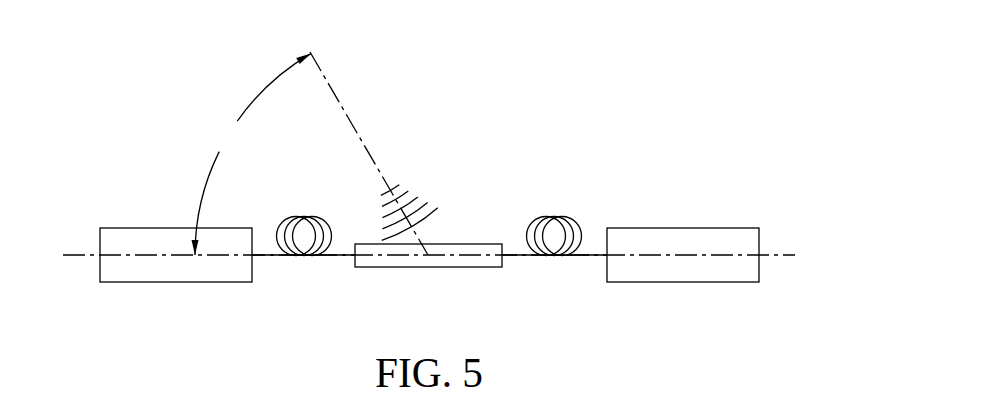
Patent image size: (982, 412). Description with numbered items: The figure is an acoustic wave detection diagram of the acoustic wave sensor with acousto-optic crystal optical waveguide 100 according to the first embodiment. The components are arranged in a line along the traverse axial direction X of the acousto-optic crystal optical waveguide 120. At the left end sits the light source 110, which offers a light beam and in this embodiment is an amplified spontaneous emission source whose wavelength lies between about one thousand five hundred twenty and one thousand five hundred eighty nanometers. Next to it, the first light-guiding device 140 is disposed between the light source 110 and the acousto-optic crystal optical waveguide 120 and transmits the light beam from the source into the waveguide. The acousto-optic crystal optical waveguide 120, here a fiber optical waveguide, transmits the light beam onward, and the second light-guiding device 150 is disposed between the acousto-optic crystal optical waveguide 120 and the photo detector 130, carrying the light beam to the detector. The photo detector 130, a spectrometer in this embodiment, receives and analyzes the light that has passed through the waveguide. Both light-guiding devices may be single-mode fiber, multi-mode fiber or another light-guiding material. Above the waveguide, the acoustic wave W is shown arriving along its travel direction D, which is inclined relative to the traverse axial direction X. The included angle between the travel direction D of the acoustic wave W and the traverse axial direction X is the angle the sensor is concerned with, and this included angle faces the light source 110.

The acoustic wave sensor with acousto-optic crystal optical waveguide 100 is at (134, 108).
The light source 110 is at (149, 227).
The acousto-optic crystal optical waveguide 120 is at (485, 244).
The photo detector 130 is at (668, 228).
The first light-guiding device 140 is at (295, 215).
The second light-guiding device 150 is at (546, 216).
The traverse axial direction X is at (777, 253).
The travel direction D is at (347, 111).
The acoustic wave W is at (432, 202).